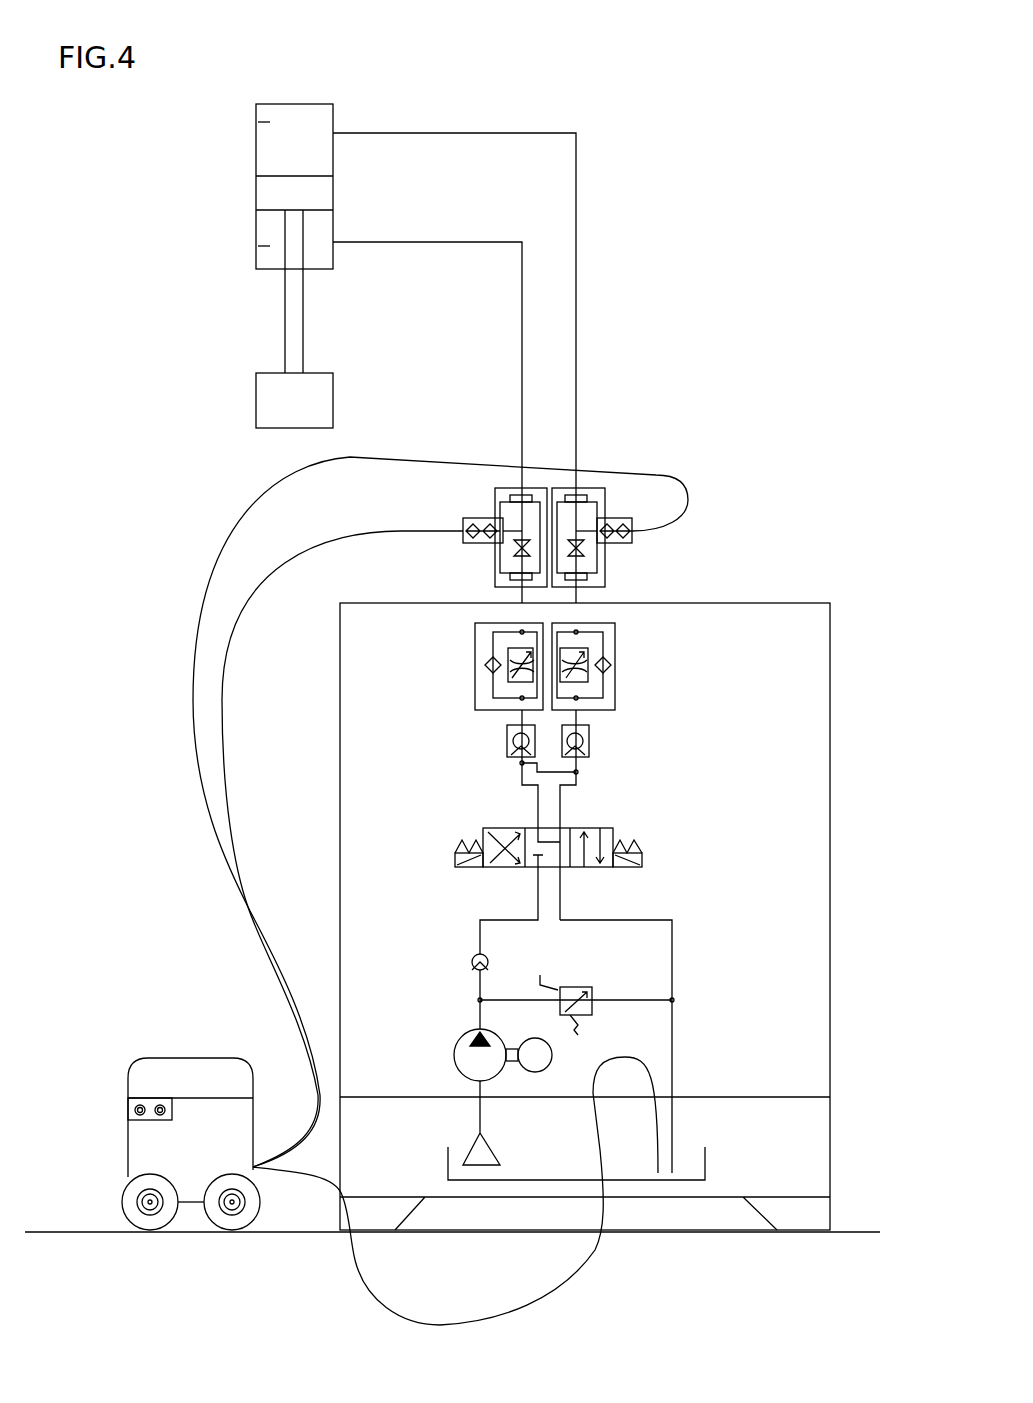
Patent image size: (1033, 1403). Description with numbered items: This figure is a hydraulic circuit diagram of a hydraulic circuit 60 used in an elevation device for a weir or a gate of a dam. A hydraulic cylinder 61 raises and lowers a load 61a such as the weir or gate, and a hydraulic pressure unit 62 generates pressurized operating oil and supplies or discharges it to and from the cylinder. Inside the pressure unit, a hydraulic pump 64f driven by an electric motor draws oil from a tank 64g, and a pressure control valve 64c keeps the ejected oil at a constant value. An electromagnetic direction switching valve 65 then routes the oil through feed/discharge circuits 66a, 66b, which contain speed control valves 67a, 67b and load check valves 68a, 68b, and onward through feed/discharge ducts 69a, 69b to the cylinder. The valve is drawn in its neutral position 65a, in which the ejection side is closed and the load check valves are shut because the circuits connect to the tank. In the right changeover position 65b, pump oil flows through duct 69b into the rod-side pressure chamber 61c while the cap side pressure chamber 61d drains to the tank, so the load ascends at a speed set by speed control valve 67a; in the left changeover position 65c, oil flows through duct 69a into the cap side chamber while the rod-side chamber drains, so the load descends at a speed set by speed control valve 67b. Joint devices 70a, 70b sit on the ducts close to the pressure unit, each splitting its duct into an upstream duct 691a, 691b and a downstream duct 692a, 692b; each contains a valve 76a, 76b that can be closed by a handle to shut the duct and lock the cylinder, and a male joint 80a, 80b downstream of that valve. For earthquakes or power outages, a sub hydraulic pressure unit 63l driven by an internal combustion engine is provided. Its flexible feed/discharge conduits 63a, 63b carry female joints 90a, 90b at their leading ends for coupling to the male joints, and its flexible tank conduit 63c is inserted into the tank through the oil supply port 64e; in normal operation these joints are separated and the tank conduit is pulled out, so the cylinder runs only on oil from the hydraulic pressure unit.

The hydraulic circuit 60 is at (745, 172).
The hydraulic cylinder 61 is at (266, 177).
The load 61a is at (266, 396).
The rod-side pressure chamber 61c is at (266, 246).
The cap side pressure chamber 61d is at (266, 122).
The hydraulic pressure unit 62 is at (804, 603).
The flexible feed/discharge conduit 63a is at (192, 683).
The flexible feed/discharge conduit 63b is at (223, 688).
The flexible tank conduit 63c is at (348, 1245).
The sub hydraulic pressure unit 63l is at (138, 1078).
The pressure control valve 64c is at (592, 987).
The oil supply port 64e is at (643, 1043).
The hydraulic pump 64f is at (454, 1055).
The tank 64g is at (668, 1182).
The electromagnetic direction switching valve 65 is at (550, 828).
The neutral position 65a is at (533, 826).
The right changeover position 65b is at (612, 828).
The left changeover position 65c is at (480, 829).
The feed/discharge circuit 66a is at (615, 632).
The feed/discharge circuit 66b is at (475, 628).
The speed control valve 67a is at (615, 668).
The speed control valve 67b is at (475, 665).
The load check valve 68a is at (588, 741).
The load check valve 68b is at (507, 741).
The feed/discharge duct 69a is at (420, 133).
The feed/discharge duct 69b is at (423, 242).
The joint device 70a is at (607, 570).
The joint device 70b is at (498, 568).
The valve 76a is at (607, 550).
The valve 76b is at (475, 557).
The male joint 80a is at (604, 520).
The male joint 80b is at (496, 517).
The female joint 90a is at (618, 517).
The female joint 90b is at (478, 518).
The upstream duct 691a is at (607, 584).
The upstream duct 691b is at (497, 584).
The downstream duct 692a is at (598, 488).
The downstream duct 692b is at (511, 488).